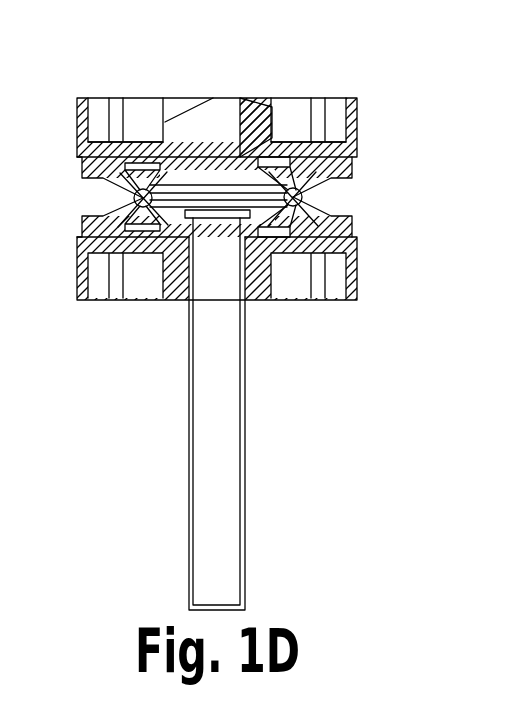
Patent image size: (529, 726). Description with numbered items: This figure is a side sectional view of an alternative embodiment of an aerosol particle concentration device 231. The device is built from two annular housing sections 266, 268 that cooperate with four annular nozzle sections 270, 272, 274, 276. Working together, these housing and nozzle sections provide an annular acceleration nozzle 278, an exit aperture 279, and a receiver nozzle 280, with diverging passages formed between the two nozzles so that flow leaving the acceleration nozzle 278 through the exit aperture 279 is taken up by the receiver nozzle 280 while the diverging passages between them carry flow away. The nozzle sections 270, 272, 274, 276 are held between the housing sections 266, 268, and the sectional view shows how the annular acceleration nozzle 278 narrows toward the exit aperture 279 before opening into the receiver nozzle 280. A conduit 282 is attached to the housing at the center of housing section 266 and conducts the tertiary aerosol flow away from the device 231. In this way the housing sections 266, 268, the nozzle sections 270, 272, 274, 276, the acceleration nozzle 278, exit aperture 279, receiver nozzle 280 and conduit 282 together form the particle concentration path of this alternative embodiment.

The aerosol particle concentration device 231 is at (120, 455).
The annular housing section 266 is at (141, 300).
The annular housing section 268 is at (142, 97).
The annular nozzle section 270 is at (353, 228).
The annular nozzle section 272 is at (353, 167).
The annular nozzle section 274 is at (286, 207).
The annular nozzle section 276 is at (293, 195).
The annular acceleration nozzle 278 is at (296, 192).
The exit aperture 279 is at (323, 203).
The receiver nozzle 280 is at (236, 242).
The conduit 282 is at (246, 508).